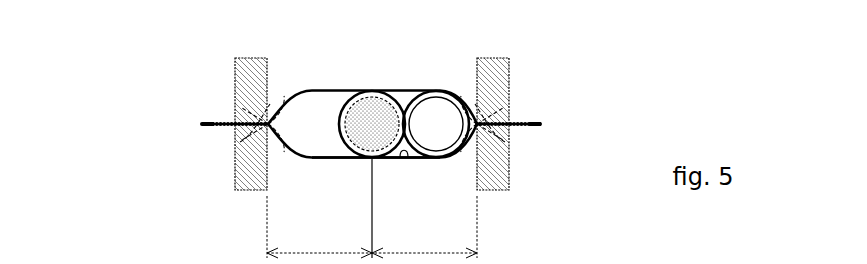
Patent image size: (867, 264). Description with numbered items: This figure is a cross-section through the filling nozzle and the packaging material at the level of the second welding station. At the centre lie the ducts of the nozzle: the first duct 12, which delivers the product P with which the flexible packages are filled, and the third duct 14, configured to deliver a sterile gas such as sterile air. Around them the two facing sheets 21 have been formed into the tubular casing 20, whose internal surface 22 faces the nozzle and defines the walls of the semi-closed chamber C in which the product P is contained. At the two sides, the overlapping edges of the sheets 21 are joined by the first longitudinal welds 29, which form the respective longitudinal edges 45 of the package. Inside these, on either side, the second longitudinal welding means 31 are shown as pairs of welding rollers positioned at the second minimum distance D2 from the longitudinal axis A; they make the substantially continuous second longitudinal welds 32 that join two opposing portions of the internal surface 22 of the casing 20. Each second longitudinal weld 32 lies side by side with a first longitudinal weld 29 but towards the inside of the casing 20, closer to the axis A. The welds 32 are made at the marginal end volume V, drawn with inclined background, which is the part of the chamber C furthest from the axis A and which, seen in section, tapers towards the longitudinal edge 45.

The first duct 12 is at (368, 91).
The third duct 14 is at (432, 95).
The tubular casing 20 is at (315, 159).
The sheet 21 is at (323, 88).
The internal surface 22 is at (404, 160).
The first longitudinal weld 29 is at (222, 122).
The second longitudinal welding means 31 is at (251, 58).
The second longitudinal weld 32 is at (248, 132).
The longitudinal edge 45 is at (201, 125).
The marginal end volume V is at (268, 118).
The longitudinal axis A is at (373, 122).
The semi-closed chamber C is at (300, 133).
The product P is at (362, 141).
The second minimum distance D2 is at (372, 208).